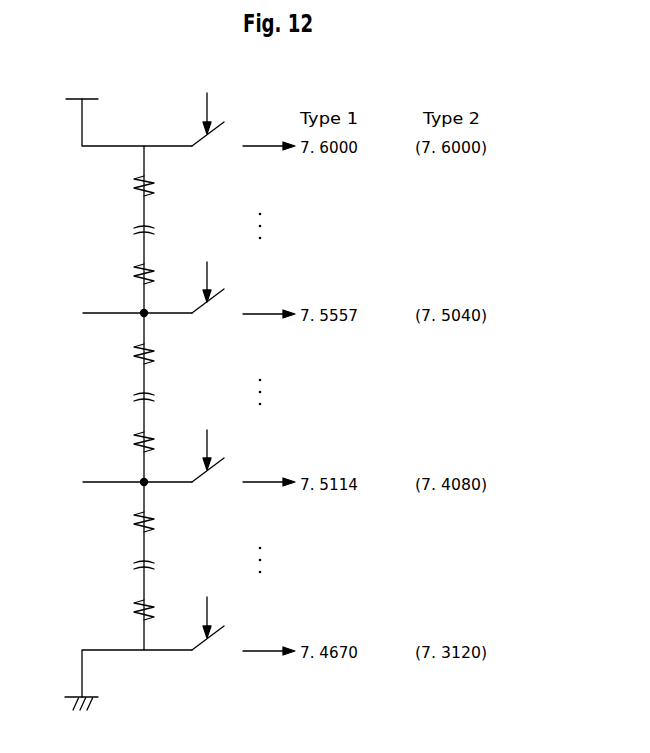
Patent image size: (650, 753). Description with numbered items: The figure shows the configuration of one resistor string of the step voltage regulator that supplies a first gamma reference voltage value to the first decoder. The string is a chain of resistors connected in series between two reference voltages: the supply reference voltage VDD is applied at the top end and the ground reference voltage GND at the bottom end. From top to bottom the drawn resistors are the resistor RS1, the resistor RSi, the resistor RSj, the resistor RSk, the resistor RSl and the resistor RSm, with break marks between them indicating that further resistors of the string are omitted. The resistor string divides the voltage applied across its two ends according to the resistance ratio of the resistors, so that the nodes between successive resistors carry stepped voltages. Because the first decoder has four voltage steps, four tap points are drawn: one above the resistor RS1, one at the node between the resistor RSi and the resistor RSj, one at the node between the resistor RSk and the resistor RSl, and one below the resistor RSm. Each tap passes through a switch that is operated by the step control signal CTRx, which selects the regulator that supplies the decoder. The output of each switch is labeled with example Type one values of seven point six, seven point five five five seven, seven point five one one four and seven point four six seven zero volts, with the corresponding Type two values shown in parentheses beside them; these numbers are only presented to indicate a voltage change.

The reference voltage (high side) VDD is at (82, 89).
The reference voltage (ground) GND is at (81, 715).
The step control signal CTRx is at (207, 363).
The resistor RS1 is at (127, 187).
The resistor RSi is at (127, 275).
The resistor RSj is at (127, 355).
The resistor RSk is at (127, 443).
The resistor RSl is at (127, 523).
The resistor RSm is at (127, 611).